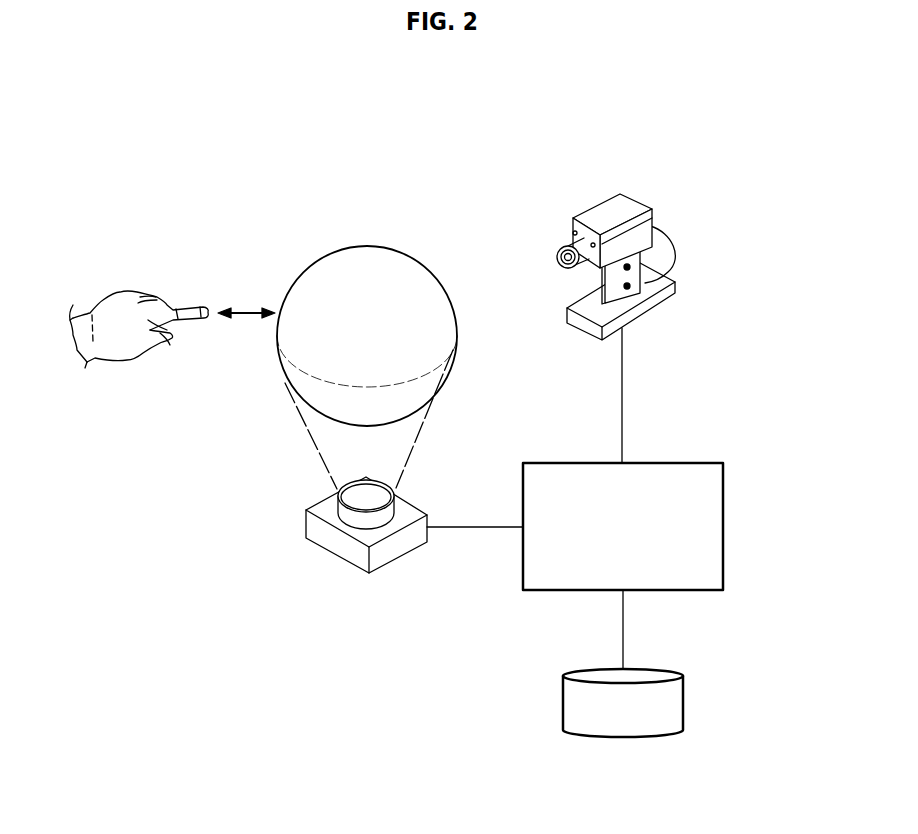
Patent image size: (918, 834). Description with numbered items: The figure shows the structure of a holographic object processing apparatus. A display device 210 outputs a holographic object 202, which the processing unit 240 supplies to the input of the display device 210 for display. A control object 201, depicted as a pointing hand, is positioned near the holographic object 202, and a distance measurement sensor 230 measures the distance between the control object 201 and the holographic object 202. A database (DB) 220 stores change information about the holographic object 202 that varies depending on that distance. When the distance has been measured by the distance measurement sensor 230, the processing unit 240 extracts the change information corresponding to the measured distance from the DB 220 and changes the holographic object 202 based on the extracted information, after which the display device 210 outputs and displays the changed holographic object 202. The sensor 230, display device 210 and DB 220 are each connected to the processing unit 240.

The control object 201 is at (127, 289).
The holographic object 202 is at (367, 245).
The display device 210 is at (400, 558).
The database (DB) 220 is at (683, 705).
The distance measurement sensor 230 is at (637, 200).
The processing unit 240 is at (725, 527).